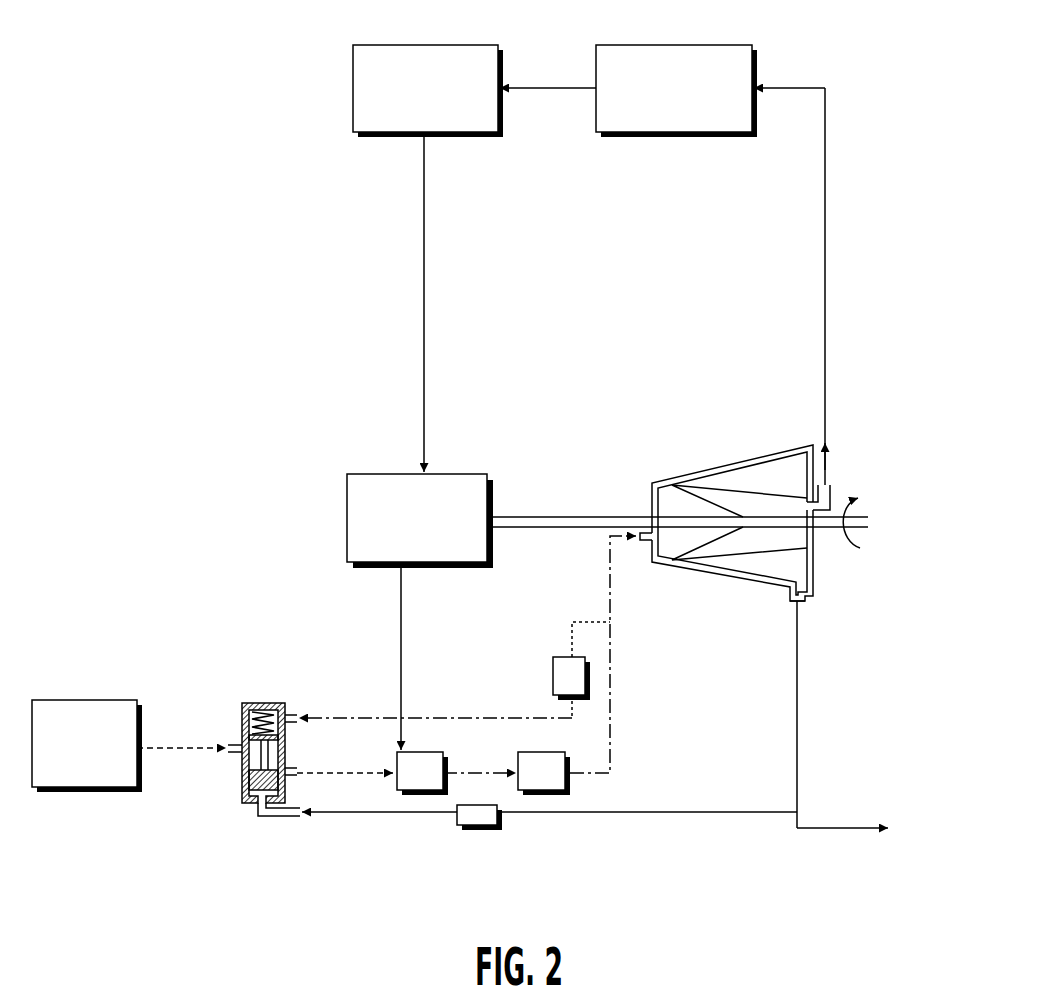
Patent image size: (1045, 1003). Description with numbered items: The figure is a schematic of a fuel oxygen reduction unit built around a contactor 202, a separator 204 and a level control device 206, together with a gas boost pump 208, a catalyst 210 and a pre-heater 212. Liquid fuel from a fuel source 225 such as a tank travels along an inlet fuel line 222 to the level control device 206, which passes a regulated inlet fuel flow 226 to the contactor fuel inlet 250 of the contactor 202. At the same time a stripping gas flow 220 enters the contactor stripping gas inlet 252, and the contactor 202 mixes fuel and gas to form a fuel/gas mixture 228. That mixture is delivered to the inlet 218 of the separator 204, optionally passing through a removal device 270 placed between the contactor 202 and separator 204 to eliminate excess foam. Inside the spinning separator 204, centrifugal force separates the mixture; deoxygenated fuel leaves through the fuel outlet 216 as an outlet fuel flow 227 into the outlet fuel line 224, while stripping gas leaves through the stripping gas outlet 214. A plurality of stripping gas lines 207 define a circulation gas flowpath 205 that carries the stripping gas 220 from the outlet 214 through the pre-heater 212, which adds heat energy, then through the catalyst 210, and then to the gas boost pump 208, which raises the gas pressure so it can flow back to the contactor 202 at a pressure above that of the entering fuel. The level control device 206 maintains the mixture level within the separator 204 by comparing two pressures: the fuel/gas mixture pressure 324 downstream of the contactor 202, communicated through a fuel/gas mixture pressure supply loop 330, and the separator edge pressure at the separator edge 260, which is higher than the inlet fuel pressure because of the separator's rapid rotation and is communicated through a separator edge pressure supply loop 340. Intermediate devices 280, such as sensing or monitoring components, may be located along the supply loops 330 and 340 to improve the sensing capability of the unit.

The contactor 202 is at (415, 790).
The separator 204 is at (767, 513).
The circulation gas flowpath 205 is at (687, 286).
The level control device 206 is at (242, 792).
The stripping gas line 207 is at (424, 218).
The gas boost pump 208 is at (494, 492).
The catalyst 210 is at (353, 91).
The pre-heater 212 is at (672, 135).
The stripping gas outlet 214 is at (832, 492).
The fuel outlet 216 is at (802, 603).
The inlet 218 is at (627, 542).
The stripping gas flow 220 is at (545, 88).
The inlet fuel line 222 is at (152, 748).
The outlet fuel line 224 is at (827, 828).
The fuel source 225 is at (88, 700).
The inlet fuel flow 226 is at (318, 773).
The outlet fuel flow 227 is at (797, 762).
The fuel/gas mixture 228 is at (450, 773).
The contactor fuel inlet 250 is at (392, 778).
The contactor stripping gas inlet 252 is at (413, 752).
The separator edge 260 is at (773, 452).
The removal device 270 is at (565, 790).
The intermediate device 280 is at (475, 825).
The fuel/gas mixture pressure 324 is at (300, 715).
The fuel/gas mixture pressure supply loop 330 is at (497, 718).
The separator edge pressure supply loop 340 is at (533, 812).